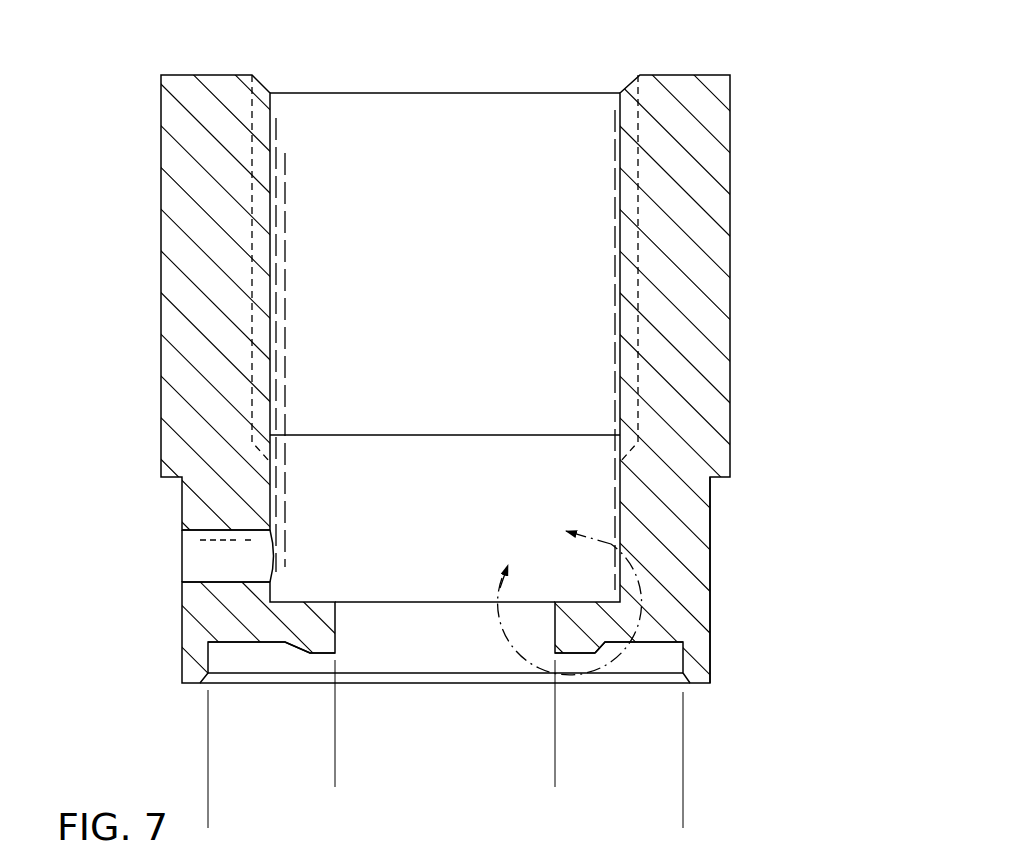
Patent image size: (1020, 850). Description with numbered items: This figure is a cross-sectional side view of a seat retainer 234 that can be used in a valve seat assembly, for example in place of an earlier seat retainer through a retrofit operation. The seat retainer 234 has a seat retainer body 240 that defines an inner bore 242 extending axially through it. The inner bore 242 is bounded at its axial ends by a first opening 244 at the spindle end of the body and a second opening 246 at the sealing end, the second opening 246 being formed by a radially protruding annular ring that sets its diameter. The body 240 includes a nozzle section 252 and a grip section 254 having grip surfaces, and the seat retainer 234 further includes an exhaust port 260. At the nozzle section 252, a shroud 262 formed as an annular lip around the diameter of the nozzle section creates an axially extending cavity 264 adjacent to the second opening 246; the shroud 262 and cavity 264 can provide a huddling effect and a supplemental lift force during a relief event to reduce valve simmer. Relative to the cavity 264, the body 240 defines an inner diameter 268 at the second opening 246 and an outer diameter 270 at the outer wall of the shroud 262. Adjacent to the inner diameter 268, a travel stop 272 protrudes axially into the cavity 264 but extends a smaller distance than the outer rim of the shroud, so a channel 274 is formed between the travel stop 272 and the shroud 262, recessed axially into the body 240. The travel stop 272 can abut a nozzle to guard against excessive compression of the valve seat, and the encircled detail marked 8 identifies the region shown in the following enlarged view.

The seat retainer 234 is at (94, 82).
The seat retainer body 240 is at (161, 275).
The inner bore 242 is at (527, 110).
The first opening 244 is at (259, 82).
The second opening 246 is at (335, 602).
The nozzle section 252 is at (714, 665).
The grip section 254 is at (730, 275).
The exhaust port 260 is at (210, 543).
The shroud 262 is at (184, 664).
The cavity 264 is at (301, 660).
The inner diameter 268 is at (553, 775).
The outer diameter 270 is at (681, 815).
The travel stop 272 is at (575, 654).
The channel 274 is at (644, 660).
The section detail circle for FIG. 8 is at (566, 587).